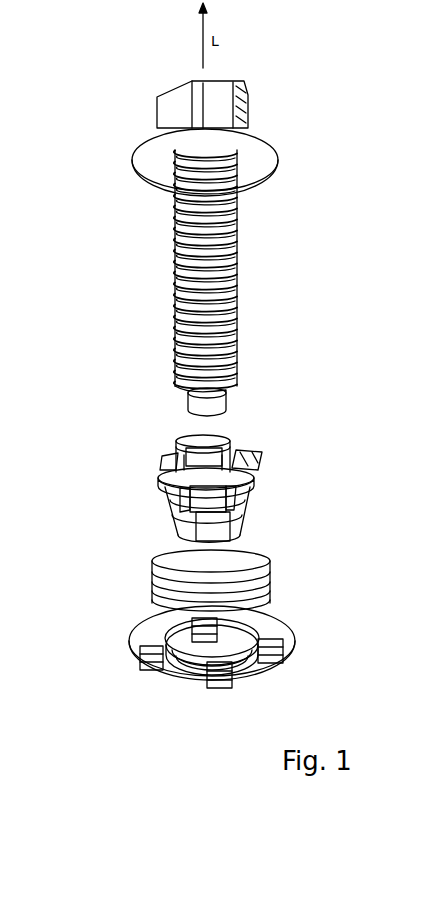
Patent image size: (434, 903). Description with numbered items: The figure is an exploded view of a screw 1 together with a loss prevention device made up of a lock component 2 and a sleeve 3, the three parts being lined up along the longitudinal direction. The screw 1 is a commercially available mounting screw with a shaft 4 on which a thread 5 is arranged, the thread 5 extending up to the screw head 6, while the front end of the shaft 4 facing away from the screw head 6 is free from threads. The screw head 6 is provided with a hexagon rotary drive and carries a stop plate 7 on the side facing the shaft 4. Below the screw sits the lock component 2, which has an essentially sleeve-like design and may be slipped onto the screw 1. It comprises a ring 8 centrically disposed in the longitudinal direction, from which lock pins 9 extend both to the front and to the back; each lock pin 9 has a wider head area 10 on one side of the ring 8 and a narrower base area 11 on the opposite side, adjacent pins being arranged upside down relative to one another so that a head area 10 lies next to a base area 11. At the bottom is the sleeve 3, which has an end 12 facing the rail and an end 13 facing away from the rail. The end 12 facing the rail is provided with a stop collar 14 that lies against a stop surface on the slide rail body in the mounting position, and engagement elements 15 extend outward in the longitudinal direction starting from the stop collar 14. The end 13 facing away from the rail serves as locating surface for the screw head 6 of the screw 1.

The screw 1 is at (138, 248).
The lock component 2 is at (283, 483).
The sleeve 3 is at (95, 633).
The shaft 4 is at (240, 315).
The thread 5 is at (240, 248).
The screw head 6 is at (143, 118).
The stop plate 7 is at (262, 170).
The ring 8 is at (262, 462).
The lock pins 9 is at (185, 455).
The head area 10 is at (190, 445).
The base area 11 is at (165, 462).
The end facing the rail 12 is at (298, 652).
The end facing away from the rail 13 is at (167, 568).
The stop collar 14 is at (187, 672).
The engagement elements 15 is at (192, 622).